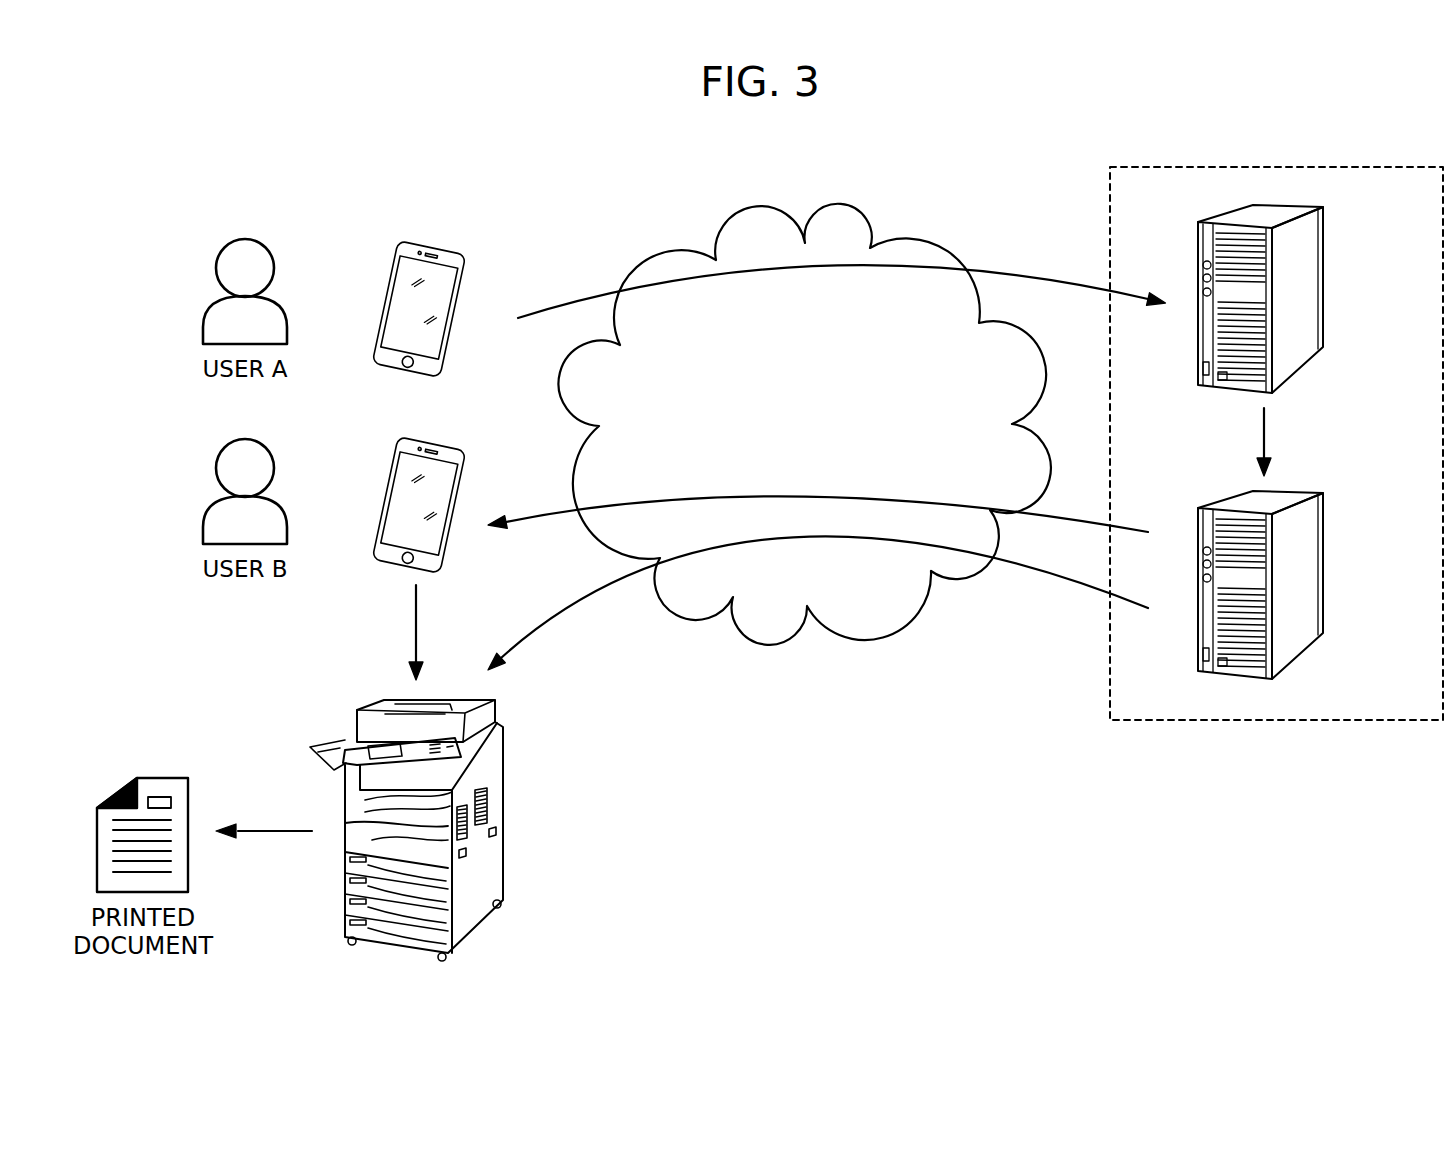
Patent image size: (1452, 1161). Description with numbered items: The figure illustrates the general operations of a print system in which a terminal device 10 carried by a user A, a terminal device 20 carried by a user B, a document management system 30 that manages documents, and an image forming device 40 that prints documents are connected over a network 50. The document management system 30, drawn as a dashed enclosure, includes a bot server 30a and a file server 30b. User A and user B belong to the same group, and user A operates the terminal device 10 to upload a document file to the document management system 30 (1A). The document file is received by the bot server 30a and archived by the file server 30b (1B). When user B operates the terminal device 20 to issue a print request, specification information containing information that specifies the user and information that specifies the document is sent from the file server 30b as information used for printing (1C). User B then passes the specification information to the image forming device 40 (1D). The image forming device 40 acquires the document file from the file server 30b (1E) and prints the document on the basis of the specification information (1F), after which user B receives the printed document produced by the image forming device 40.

The terminal device 10 is at (451, 242).
The terminal device 20 is at (451, 437).
The document management system 30 is at (1380, 166).
The bot server 30a is at (1325, 240).
The file server 30b is at (1325, 526).
The image forming device 40 is at (503, 848).
The network 50 is at (921, 237).
The upload of document file 1A is at (1010, 275).
The reception and archiving of document file 1B is at (1265, 432).
The sending of specification information 1C is at (539, 515).
The passing of specification information 1D is at (414, 628).
The acquisition of document file 1E is at (558, 608).
The printing of document 1F is at (270, 832).